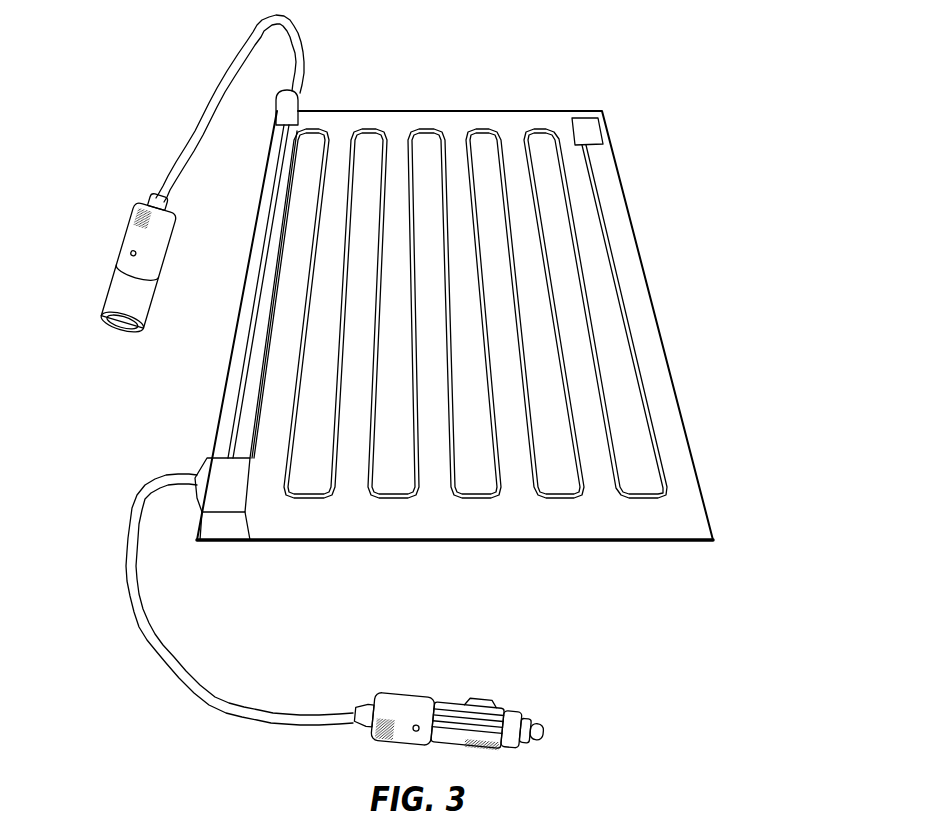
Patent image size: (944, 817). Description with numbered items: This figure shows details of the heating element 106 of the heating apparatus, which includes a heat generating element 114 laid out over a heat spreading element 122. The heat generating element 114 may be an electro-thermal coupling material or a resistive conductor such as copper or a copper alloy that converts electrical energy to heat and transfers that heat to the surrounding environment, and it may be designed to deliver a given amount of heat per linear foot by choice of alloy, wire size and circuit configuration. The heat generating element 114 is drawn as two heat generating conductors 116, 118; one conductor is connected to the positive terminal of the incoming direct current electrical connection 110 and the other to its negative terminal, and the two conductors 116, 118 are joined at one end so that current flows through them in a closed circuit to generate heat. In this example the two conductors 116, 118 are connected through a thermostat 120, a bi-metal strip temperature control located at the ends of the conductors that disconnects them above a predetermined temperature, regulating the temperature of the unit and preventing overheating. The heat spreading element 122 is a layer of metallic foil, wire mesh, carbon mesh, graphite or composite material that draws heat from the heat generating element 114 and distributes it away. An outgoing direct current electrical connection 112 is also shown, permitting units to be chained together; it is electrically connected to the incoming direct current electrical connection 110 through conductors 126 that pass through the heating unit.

The heating element 106 is at (668, 257).
The incoming direct current electrical connection 110 is at (442, 696).
The outgoing direct current electrical connection 112 is at (126, 243).
The heat generating element 114 is at (650, 507).
The heat generating conductor 116 is at (250, 442).
The heat generating conductor 118 is at (252, 457).
The thermostat 120 is at (603, 129).
The heat spreading element 122 is at (467, 102).
The conductors 126 is at (238, 416).